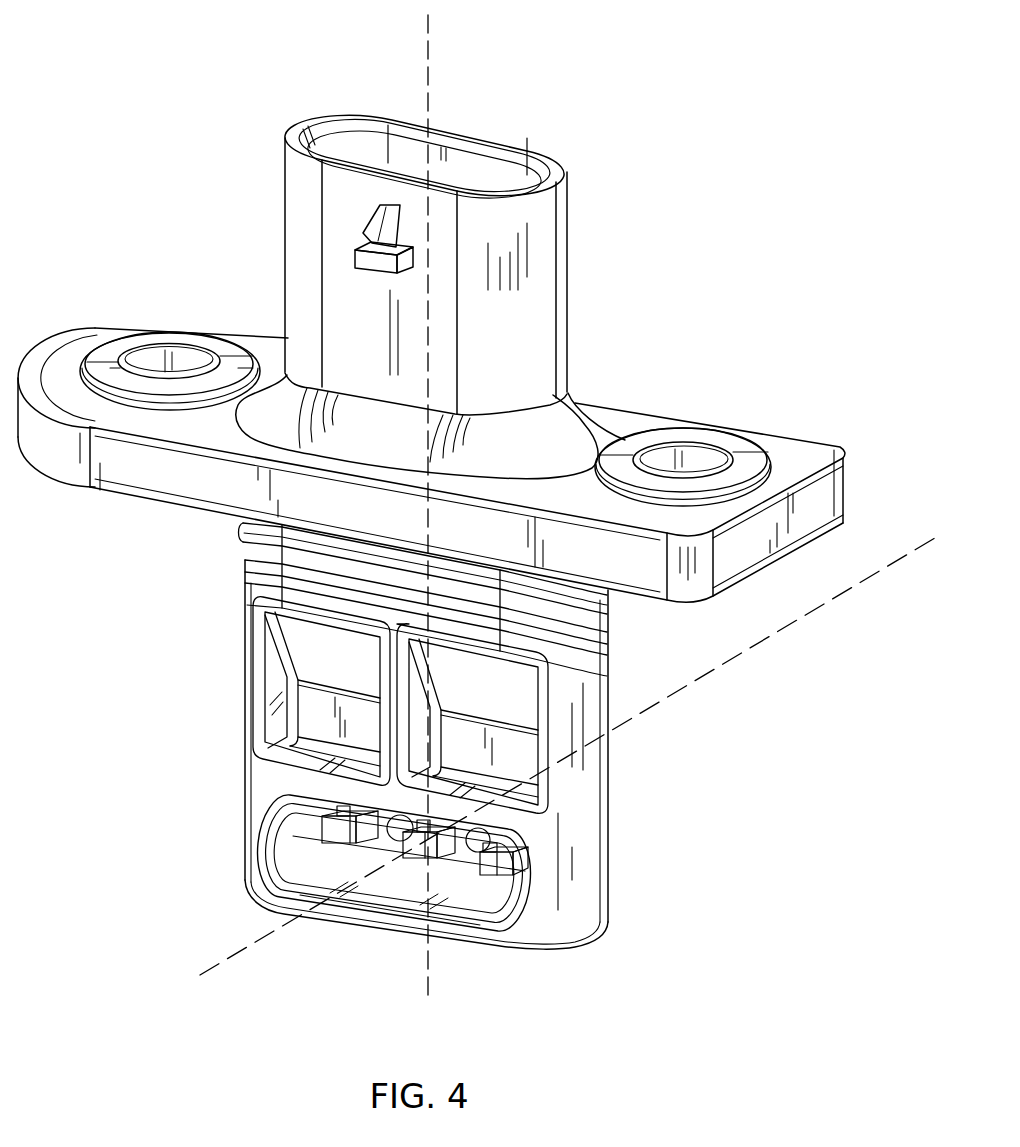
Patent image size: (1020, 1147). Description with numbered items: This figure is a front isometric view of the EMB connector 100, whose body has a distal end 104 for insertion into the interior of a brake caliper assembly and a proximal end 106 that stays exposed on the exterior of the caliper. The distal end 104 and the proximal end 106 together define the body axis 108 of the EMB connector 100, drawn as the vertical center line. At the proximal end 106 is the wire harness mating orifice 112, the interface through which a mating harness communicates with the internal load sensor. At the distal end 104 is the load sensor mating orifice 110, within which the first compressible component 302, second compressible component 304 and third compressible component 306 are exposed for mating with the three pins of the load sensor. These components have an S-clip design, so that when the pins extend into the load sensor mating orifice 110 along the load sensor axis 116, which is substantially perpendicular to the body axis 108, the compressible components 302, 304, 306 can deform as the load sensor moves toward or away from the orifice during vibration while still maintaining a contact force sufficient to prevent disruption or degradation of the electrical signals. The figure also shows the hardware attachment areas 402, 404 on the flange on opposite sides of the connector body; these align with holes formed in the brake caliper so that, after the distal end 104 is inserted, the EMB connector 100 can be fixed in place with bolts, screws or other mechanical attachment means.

The EMB connector 100 is at (228, 150).
The distal end 104 is at (392, 766).
The proximal end 106 is at (430, 273).
The body axis 108 is at (432, 55).
The load sensor mating orifice 110 is at (354, 893).
The wire harness mating orifice 112 is at (368, 152).
The load sensor axis 116 is at (815, 612).
The first compressible component 302 is at (338, 840).
The second compressible component 304 is at (425, 842).
The third compressible component 306 is at (493, 865).
The hardware attachment area 402 is at (183, 358).
The hardware attachment area 404 is at (702, 455).